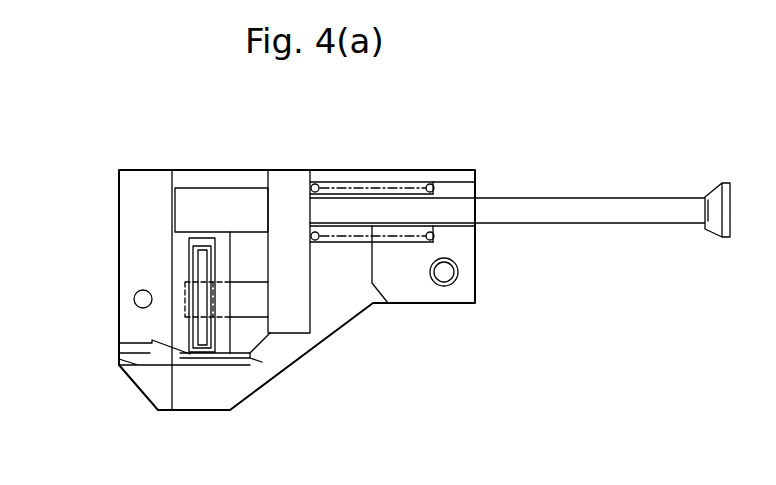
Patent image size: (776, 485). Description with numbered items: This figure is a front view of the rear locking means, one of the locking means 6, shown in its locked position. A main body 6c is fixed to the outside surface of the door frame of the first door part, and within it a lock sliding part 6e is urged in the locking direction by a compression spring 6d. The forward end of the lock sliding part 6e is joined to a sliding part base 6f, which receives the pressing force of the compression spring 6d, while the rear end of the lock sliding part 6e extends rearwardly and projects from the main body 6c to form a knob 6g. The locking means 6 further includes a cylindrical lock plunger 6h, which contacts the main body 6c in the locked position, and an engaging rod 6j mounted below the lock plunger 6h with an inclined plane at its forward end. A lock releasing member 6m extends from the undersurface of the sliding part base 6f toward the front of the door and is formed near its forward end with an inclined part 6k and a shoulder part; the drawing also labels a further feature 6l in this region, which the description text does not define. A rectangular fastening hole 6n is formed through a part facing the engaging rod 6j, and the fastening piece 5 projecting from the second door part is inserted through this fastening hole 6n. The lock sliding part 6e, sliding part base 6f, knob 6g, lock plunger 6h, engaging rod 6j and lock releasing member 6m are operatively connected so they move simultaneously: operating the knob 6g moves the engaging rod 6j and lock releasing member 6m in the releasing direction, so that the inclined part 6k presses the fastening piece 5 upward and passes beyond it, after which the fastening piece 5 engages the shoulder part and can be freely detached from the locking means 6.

The locking means 6 is at (128, 99).
The main body 6c is at (147, 168).
The lock plunger 6h is at (220, 202).
The sliding part base 6f is at (292, 183).
The lock sliding part 6e is at (362, 195).
The compression spring 6d is at (430, 185).
The knob 6g is at (620, 208).
The fastening piece 5 is at (200, 262).
The inclined part 6k is at (157, 340).
The step 6l is at (119, 343).
The lock releasing member 6m is at (152, 360).
The fastening hole 6n is at (205, 350).
The engaging rod 6j is at (257, 297).